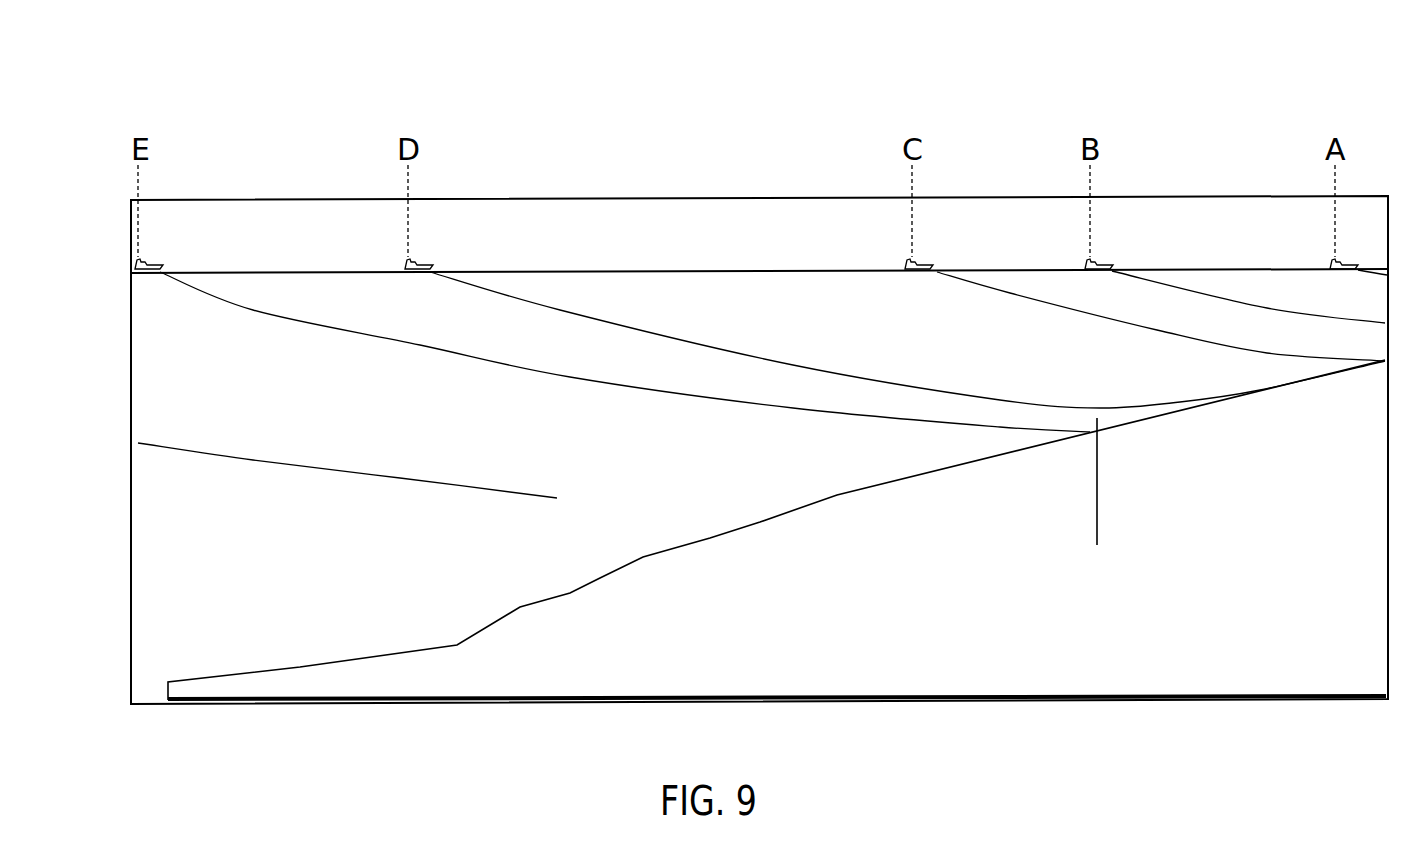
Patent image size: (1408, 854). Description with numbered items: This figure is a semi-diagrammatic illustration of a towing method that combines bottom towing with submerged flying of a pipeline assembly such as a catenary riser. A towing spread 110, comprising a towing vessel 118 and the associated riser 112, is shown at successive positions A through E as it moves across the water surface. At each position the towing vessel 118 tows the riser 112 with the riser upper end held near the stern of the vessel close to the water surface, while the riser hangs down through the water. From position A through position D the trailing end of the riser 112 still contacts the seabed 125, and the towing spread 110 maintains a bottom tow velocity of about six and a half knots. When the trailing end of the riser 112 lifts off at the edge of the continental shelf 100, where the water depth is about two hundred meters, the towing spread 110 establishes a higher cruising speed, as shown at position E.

The towing spread 110 is at (1108, 90).
The riser 112 is at (1373, 268).
The towing vessel 118 is at (146, 260).
The seabed 125 is at (892, 567).
The edge of the continental shelf 100 is at (1097, 450).